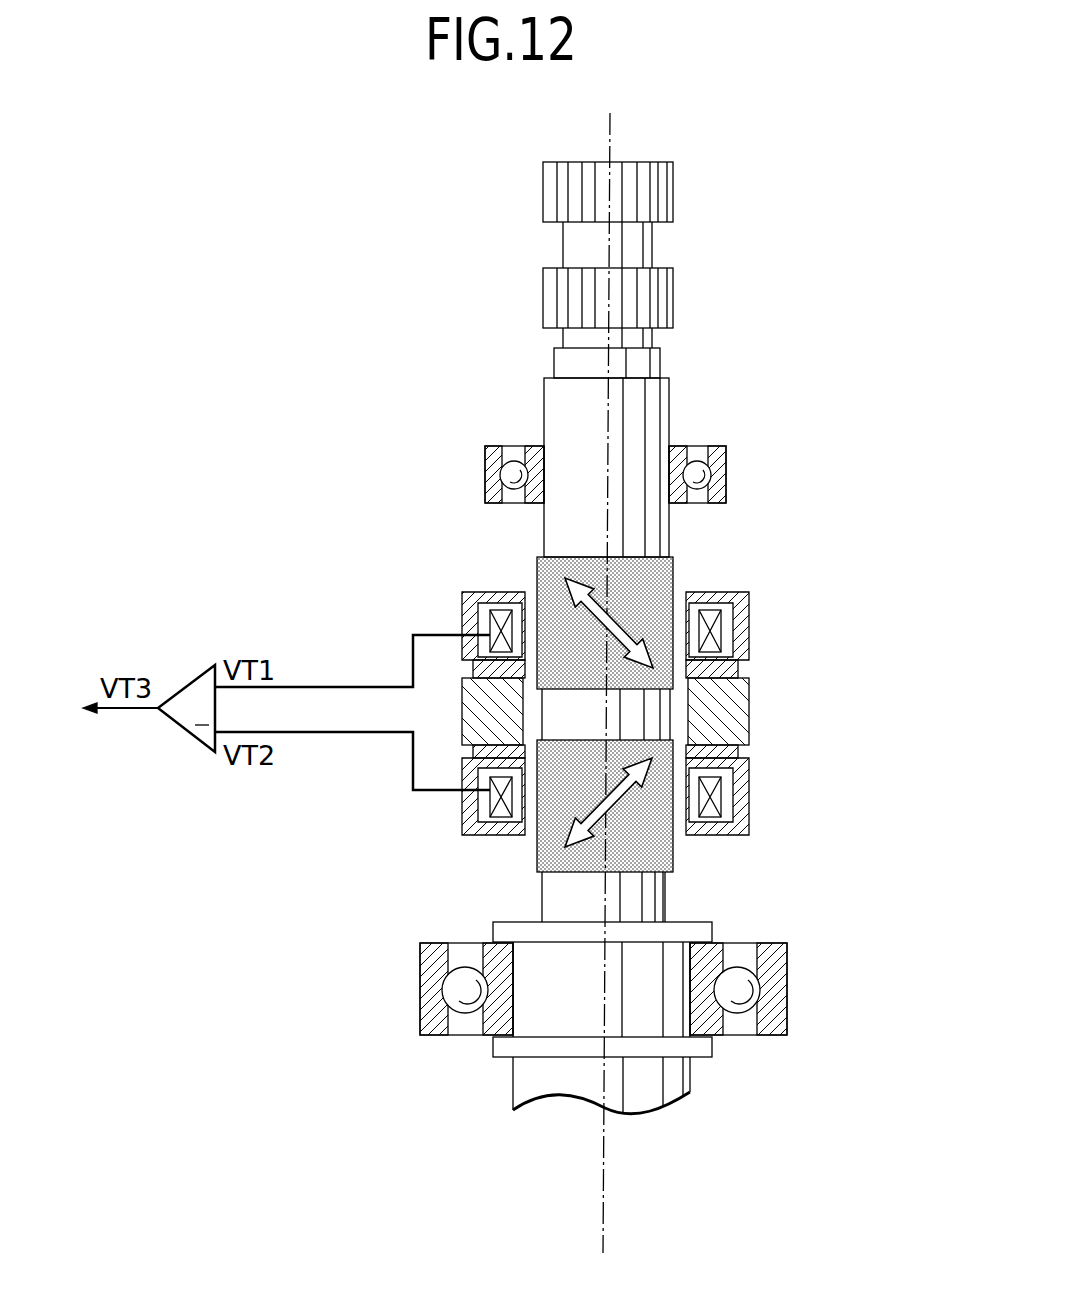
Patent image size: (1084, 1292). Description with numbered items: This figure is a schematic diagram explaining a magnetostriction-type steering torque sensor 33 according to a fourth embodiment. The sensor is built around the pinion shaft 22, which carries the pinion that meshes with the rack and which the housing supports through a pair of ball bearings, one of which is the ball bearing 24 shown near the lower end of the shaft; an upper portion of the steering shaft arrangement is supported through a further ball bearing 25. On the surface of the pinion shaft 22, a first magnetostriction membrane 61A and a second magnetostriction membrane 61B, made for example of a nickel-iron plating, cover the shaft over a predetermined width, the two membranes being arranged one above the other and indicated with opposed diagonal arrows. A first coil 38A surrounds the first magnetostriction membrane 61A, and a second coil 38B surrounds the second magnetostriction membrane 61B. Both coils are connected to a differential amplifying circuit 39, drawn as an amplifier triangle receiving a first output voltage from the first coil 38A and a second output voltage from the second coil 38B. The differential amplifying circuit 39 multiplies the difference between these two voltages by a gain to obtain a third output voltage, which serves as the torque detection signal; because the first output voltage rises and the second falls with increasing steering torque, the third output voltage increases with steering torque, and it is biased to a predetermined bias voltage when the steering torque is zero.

The pinion shaft 22 is at (684, 409).
The ball bearing 24 is at (420, 970).
The ball bearing 25 is at (727, 449).
The magnetostriction-type steering torque sensor 33 is at (638, 694).
The first coil 38A is at (490, 622).
The second coil 38B is at (490, 811).
The differential amplifying circuit 39 is at (180, 683).
The first magnetostriction membrane 61A is at (673, 560).
The second magnetostriction membrane 61B is at (663, 748).